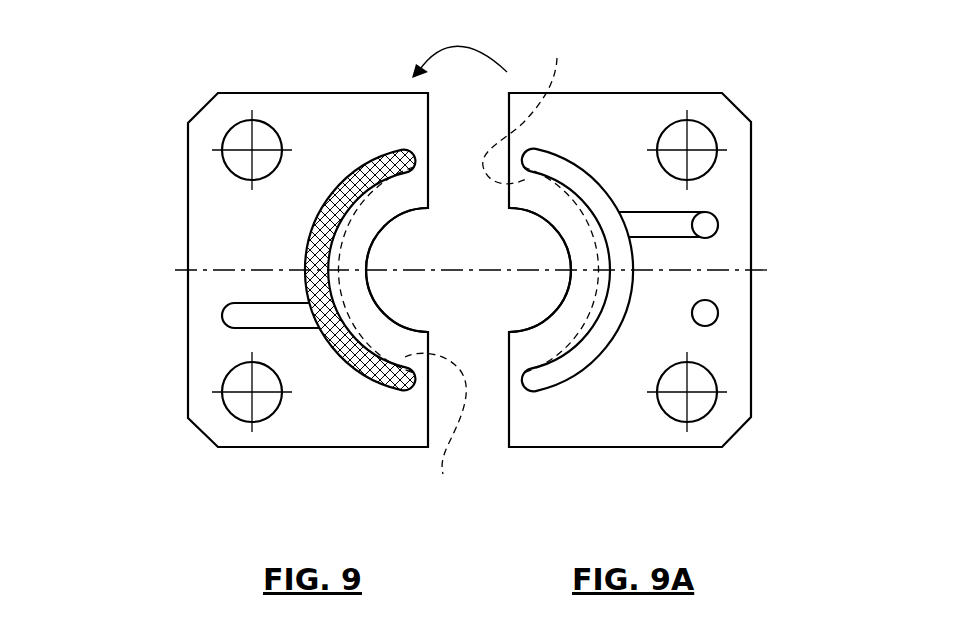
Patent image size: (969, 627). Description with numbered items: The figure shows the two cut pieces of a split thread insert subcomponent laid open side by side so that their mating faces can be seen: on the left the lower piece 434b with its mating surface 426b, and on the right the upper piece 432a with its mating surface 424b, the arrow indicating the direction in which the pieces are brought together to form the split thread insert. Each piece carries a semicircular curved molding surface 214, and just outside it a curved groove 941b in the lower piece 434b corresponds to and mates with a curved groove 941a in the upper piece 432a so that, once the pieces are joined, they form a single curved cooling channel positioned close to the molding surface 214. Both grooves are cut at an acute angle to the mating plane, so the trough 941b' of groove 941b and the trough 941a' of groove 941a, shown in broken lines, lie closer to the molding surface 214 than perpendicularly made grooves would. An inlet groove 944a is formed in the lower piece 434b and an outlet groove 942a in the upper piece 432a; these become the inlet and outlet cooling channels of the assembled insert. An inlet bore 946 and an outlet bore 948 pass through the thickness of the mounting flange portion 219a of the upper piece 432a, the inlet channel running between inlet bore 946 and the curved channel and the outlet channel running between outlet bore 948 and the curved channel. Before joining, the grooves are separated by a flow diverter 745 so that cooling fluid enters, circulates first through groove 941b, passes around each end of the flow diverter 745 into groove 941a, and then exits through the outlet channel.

In FIG. 9, the curved molding surface 214 is at (378, 282).
In FIG. 9A, the curved molding surface 214 is at (562, 303).
In FIG. 9A, the mounting flange portion 219a is at (709, 235).
In FIG. 9A, the mating surface 424b is at (630, 270).
In FIG. 9, the mating surface 426b is at (308, 270).
In FIG. 9A, the first jaw body 432a is at (709, 270).
In FIG. 9, the lower piece 434b is at (230, 270).
In FIG. 9, the flow diverter 745 is at (377, 193).
In FIG. 9A, the curved groove 941a is at (577, 332).
In FIG. 9A, the trough 941a' is at (541, 201).
In FIG. 9, the curved groove 941b is at (436, 266).
In FIG. 9, the trough 941b' is at (456, 430).
In FIG. 9A, the outlet groove 942a is at (678, 233).
In FIG. 9, the inlet groove 944a is at (235, 322).
In FIG. 9A, the inlet bore 946 is at (708, 312).
In FIG. 9A, the outlet bore 948 is at (712, 217).